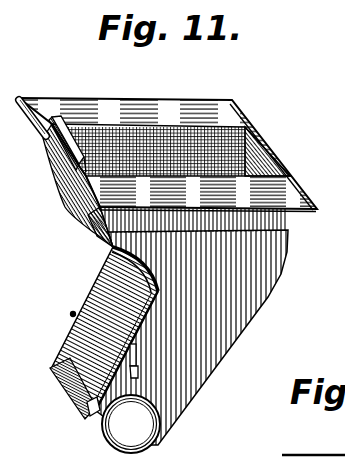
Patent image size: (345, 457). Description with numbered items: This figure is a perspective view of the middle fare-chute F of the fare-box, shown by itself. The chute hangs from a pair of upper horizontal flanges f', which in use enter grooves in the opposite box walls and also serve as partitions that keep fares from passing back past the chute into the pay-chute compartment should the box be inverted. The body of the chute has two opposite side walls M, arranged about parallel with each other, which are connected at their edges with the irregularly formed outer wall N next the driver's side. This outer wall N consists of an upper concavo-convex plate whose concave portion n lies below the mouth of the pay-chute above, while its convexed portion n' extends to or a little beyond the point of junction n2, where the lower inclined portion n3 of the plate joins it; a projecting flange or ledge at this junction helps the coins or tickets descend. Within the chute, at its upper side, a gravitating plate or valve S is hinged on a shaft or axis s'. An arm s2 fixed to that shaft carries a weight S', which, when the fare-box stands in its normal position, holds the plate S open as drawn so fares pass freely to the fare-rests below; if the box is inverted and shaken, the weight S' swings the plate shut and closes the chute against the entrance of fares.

The fare-chute F is at (242, 121).
The upper horizontal flange f' is at (168, 143).
The outer wall N is at (70, 202).
The concave portion n is at (93, 232).
The convexed portion n' is at (141, 268).
The point of junction n2 is at (158, 295).
The lower inclined portion n3 is at (112, 324).
The side wall M is at (191, 337).
The gravitating plate or valve S is at (72, 393).
The weight S' is at (131, 424).
The shaft or axis s' is at (145, 349).
The arm s2 is at (138, 372).